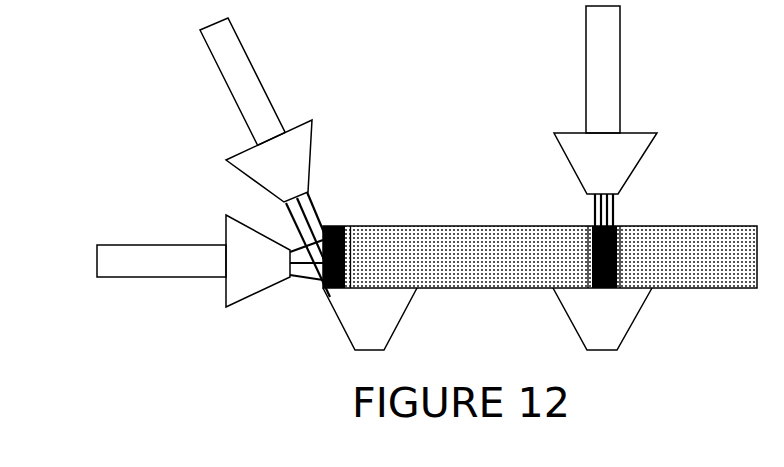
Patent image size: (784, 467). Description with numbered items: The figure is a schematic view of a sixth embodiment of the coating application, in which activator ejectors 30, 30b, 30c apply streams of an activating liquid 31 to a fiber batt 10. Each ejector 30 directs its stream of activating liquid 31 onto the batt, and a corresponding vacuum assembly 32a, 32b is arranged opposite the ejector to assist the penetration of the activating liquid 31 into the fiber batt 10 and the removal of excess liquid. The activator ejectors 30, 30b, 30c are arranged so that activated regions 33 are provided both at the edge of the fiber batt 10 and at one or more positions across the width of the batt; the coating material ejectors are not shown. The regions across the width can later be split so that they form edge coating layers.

The fiber batt 10 is at (463, 277).
The ejector 30 is at (661, 127).
The activator ejector 30b is at (316, 125).
The activator ejector 30c is at (216, 236).
The activating liquid 31 is at (626, 208).
The vacuum assembly 32a is at (656, 309).
The vacuum assembly 32b is at (327, 317).
The activated region 33 is at (362, 254).